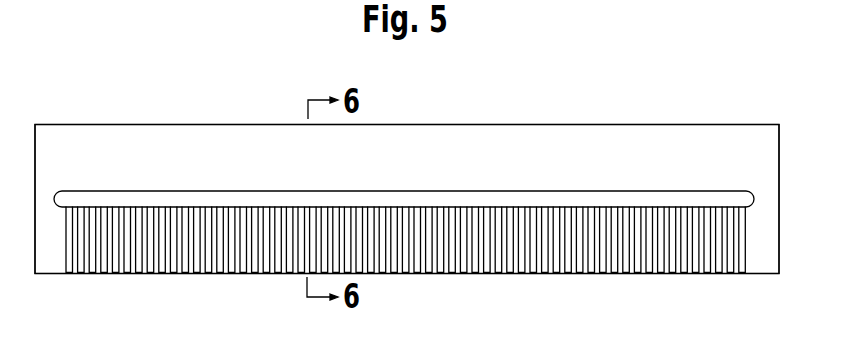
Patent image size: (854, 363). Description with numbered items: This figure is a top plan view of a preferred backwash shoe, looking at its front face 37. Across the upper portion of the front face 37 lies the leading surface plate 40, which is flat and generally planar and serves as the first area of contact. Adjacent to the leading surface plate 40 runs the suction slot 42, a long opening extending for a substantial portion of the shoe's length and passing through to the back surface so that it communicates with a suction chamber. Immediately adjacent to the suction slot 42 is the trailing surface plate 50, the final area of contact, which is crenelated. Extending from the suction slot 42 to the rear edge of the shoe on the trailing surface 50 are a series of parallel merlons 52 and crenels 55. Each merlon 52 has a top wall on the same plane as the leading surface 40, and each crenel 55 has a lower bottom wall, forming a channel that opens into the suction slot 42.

The front face 37 is at (709, 122).
The leading surface plate 40 is at (478, 142).
The suction slot 42 is at (745, 199).
The trailing surface plate 50 is at (392, 273).
The merlon 52 is at (68, 267).
The crenel 55 is at (74, 274).